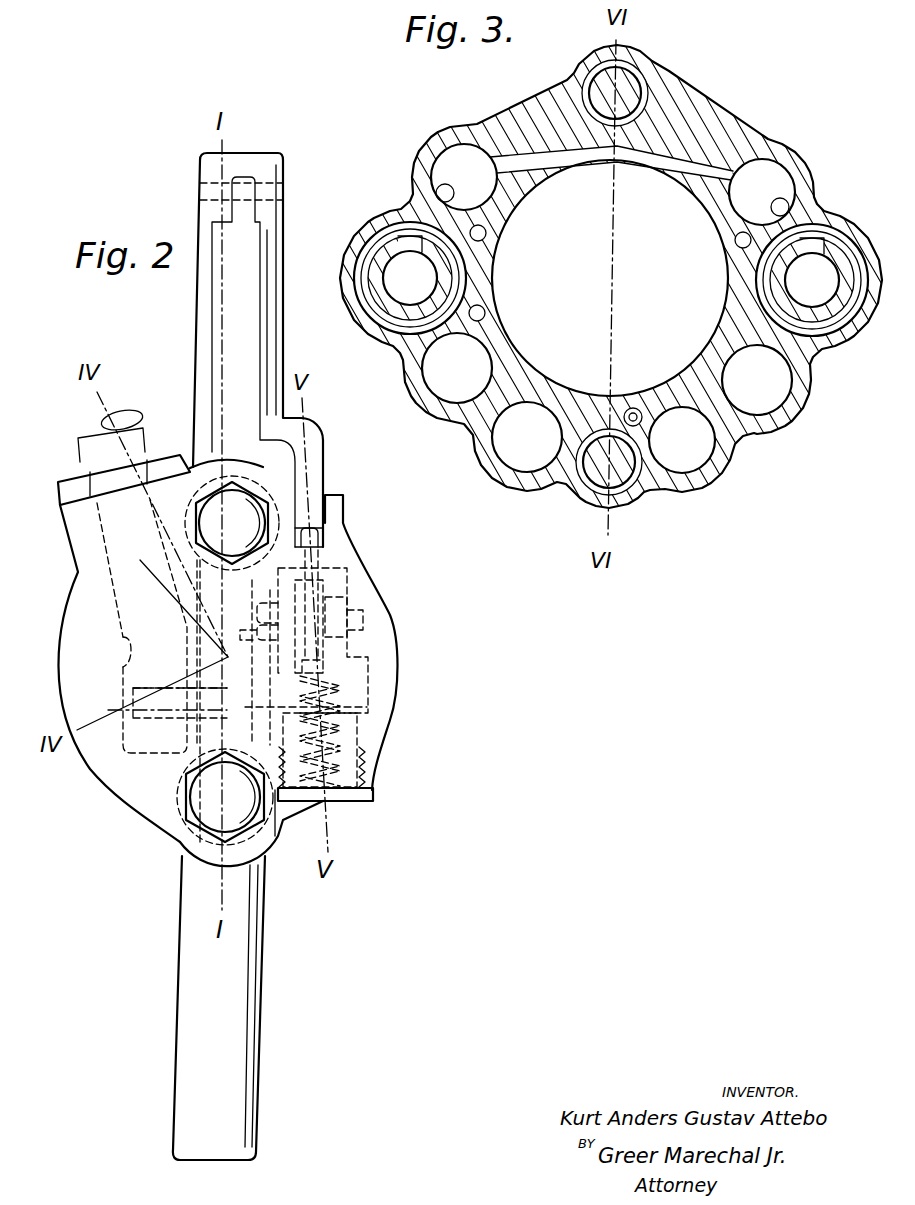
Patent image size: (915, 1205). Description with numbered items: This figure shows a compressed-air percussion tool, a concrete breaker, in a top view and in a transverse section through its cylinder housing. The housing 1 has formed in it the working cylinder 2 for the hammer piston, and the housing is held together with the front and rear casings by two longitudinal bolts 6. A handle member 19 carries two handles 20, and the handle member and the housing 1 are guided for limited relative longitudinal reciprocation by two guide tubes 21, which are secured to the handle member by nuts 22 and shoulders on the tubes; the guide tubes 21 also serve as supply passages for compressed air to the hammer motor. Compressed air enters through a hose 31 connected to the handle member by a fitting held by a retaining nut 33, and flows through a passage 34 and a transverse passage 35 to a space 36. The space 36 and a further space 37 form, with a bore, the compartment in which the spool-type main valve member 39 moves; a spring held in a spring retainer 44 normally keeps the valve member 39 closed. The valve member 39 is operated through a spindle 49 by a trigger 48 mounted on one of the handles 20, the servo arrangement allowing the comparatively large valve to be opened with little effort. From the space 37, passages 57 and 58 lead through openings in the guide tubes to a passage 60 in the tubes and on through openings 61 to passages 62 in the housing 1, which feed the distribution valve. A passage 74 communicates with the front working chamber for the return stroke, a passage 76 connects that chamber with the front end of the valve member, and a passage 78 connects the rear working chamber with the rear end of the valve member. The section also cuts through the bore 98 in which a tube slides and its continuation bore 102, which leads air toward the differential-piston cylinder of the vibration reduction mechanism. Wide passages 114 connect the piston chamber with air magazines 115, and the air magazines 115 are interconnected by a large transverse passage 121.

In FIG. 3, the housing 1 is at (720, 126).
In FIG. 3, the working cylinder 2 is at (692, 200).
In FIG. 3, the longitudinal bolts 6 is at (632, 88).
In FIG. 2, the handle member 19 is at (357, 574).
In FIG. 2, the handles 20 is at (271, 291).
In FIG. 3, the guide tubes 21 is at (373, 258).
In FIG. 2, the nuts 22 is at (213, 512).
In FIG. 2, the hose 31 is at (135, 432).
In FIG. 2, the retaining nut 33 is at (68, 482).
In FIG. 2, the passage 34 is at (123, 660).
In FIG. 2, the transverse passage 35 is at (360, 708).
In FIG. 2, the space 36 is at (360, 686).
In FIG. 2, the space 37 is at (362, 631).
In FIG. 2, the main valve member 39 is at (345, 620).
In FIG. 2, the spring retainer 44 is at (356, 800).
In FIG. 2, the trigger 48 is at (243, 349).
In FIG. 2, the spindle 49 is at (316, 536).
In FIG. 2, the passage 57 is at (256, 636).
In FIG. 2, the passage 58 is at (258, 605).
In FIG. 3, the passage 60 is at (611, 279).
In FIG. 3, the openings 61 is at (407, 306).
In FIG. 3, the passages 62 is at (462, 385).
In FIG. 3, the passage 74 is at (488, 240).
In FIG. 3, the passage 76 is at (736, 242).
In FIG. 3, the passage 78 is at (487, 314).
In FIG. 3, the bore 98 is at (648, 448).
In FIG. 3, the bore 102 is at (643, 419).
In FIG. 3, the passages 114 is at (441, 192).
In FIG. 3, the air magazines 115 is at (463, 157).
In FIG. 3, the transverse passage 121 is at (655, 152).